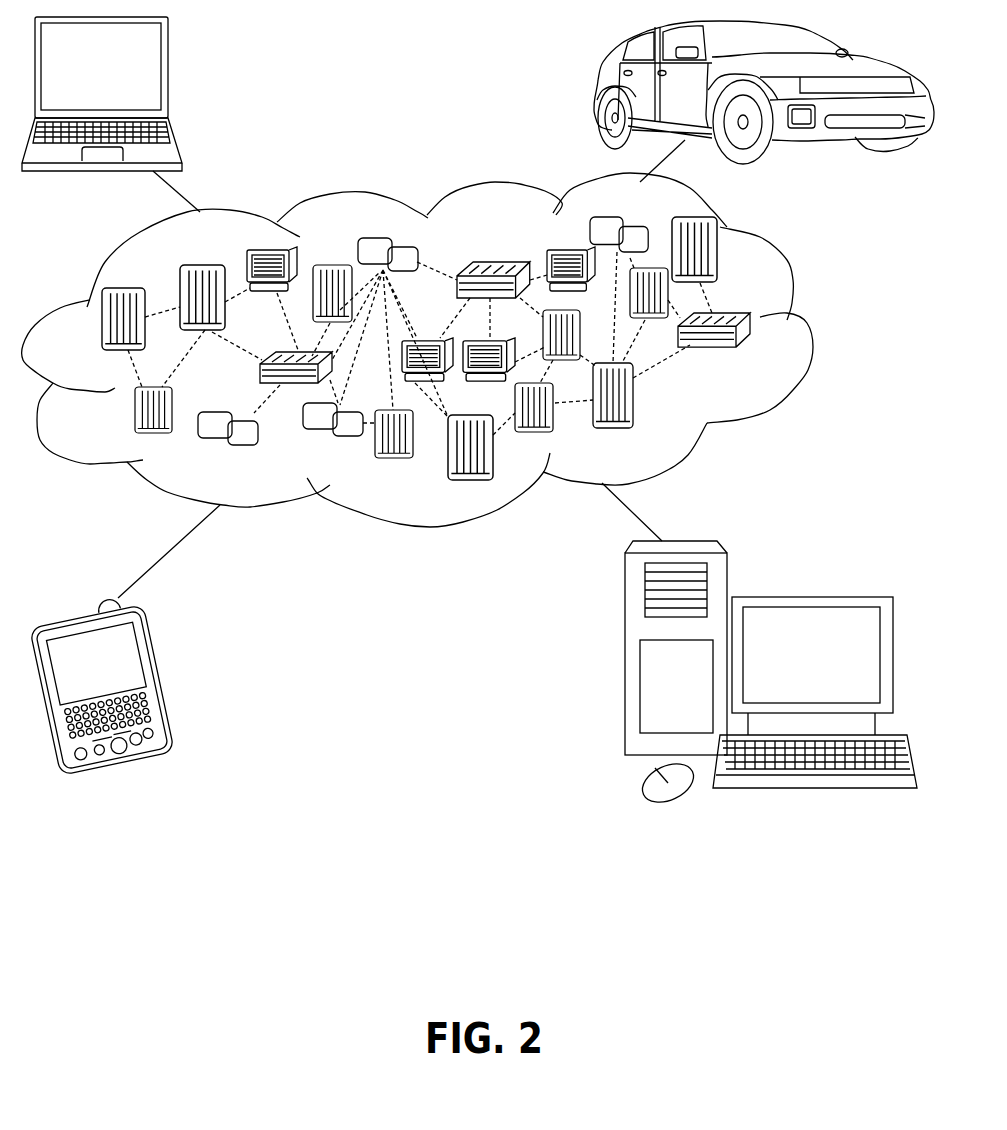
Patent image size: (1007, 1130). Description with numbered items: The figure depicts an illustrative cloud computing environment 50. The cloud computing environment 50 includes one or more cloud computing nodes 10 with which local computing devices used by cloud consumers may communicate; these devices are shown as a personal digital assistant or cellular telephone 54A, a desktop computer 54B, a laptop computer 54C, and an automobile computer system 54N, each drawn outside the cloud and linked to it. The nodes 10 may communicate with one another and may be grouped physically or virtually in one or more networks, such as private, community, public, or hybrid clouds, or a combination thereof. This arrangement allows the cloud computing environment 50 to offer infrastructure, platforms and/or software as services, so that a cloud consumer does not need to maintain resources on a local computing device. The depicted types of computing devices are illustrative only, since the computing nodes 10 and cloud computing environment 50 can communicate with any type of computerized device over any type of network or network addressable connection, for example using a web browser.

The cloud computing node 10 is at (757, 355).
The cloud computing environment 50 is at (445, 385).
The personal digital assistant (PDA) or cellular telephone 54A is at (160, 690).
The desktop computer 54B is at (812, 597).
The laptop computer 54C is at (167, 77).
The automobile computer system 54N is at (597, 95).